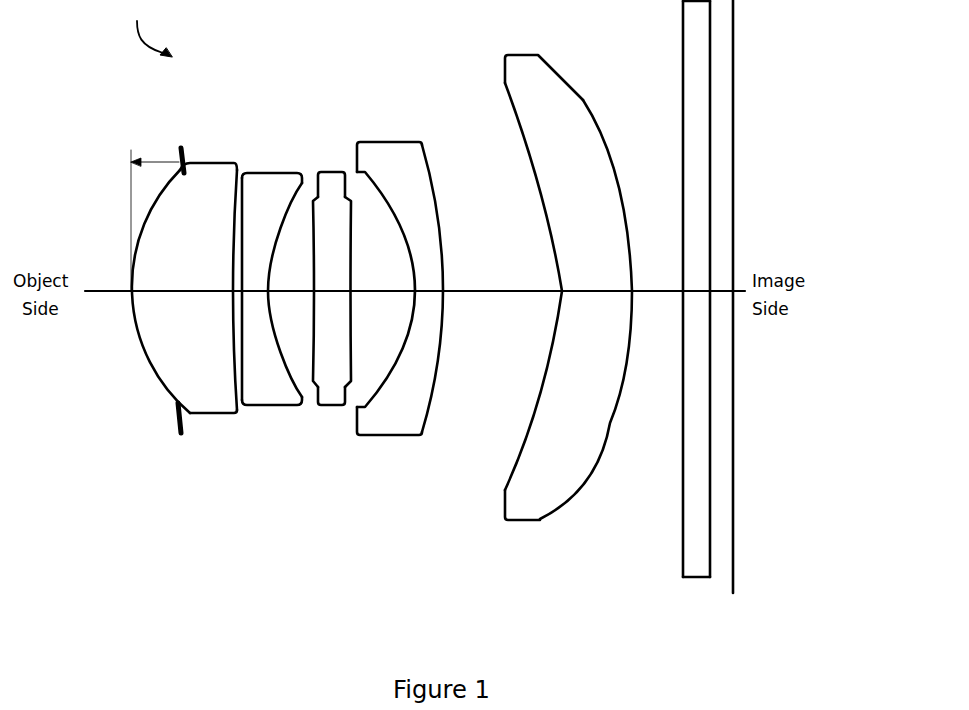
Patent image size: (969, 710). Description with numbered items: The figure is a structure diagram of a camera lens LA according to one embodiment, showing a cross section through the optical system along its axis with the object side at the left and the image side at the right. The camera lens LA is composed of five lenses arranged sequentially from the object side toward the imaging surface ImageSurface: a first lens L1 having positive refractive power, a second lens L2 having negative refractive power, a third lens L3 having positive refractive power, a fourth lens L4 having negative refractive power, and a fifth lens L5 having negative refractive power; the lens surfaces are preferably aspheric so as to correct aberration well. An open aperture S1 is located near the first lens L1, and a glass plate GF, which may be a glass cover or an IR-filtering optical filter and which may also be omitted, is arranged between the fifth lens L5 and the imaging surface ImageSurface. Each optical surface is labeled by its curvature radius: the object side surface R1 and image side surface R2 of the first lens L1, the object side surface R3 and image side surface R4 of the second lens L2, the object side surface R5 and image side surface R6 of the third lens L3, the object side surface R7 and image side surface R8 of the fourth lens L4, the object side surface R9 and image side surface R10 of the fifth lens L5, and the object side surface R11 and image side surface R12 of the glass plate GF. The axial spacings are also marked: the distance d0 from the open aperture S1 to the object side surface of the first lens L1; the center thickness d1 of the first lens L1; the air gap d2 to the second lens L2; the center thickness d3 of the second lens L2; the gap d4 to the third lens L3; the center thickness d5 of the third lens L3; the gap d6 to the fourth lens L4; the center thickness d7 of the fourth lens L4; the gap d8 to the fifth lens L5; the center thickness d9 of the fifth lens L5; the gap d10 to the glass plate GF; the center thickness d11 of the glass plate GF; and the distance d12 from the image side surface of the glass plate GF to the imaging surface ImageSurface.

The camera lens LA is at (152, 19).
The open aperture S1 is at (180, 157).
The first lens L1 is at (161, 308).
The second lens L2 is at (234, 326).
The third lens L3 is at (300, 326).
The fourth lens L4 is at (380, 322).
The fifth lens L5 is at (549, 337).
The glass plate GF is at (693, 323).
The object side surface of the first lens R1 is at (133, 300).
The image side surface of the first lens R2 is at (228, 307).
The object side surface of the second lens R3 is at (240, 308).
The image side surface of the second lens R4 is at (266, 313).
The object side surface of the third lens R5 is at (314, 313).
The image side surface of the third lens R6 is at (348, 313).
The object side surface of the fourth lens R7 is at (414, 313).
The image side surface of the fourth lens R8 is at (442, 313).
The object side surface of the fifth lens R9 is at (545, 387).
The image side surface of the fifth lens R10 is at (623, 383).
The object side surface of the glass plate R11 is at (683, 470).
The image side surface of the glass plate R12 is at (710, 470).
The axial distance from open aperture to object side surface of the first lens d0 is at (155, 220).
The center thickness of the first lens d1 is at (159, 276).
The axial distance from first lens to second lens d2 is at (229, 225).
The center thickness of the second lens d3 is at (252, 276).
The axial distance from second lens to third lens d4 is at (284, 276).
The center thickness of the third lens d5 is at (327, 276).
The axial distance from third lens to fourth lens d6 is at (380, 276).
The center thickness of the fourth lens d7 is at (425, 276).
The axial distance from fourth lens to fifth lens d8 is at (494, 276).
The center thickness of the fifth lens d9 is at (592, 276).
The axial distance from fifth lens to glass plate d10 is at (654, 276).
The center thickness of glass plate d11 is at (697, 287).
The axial distance from glass plate to imaging surface d12 is at (718, 287).
The imaging surface ImageSurface is at (738, 147).